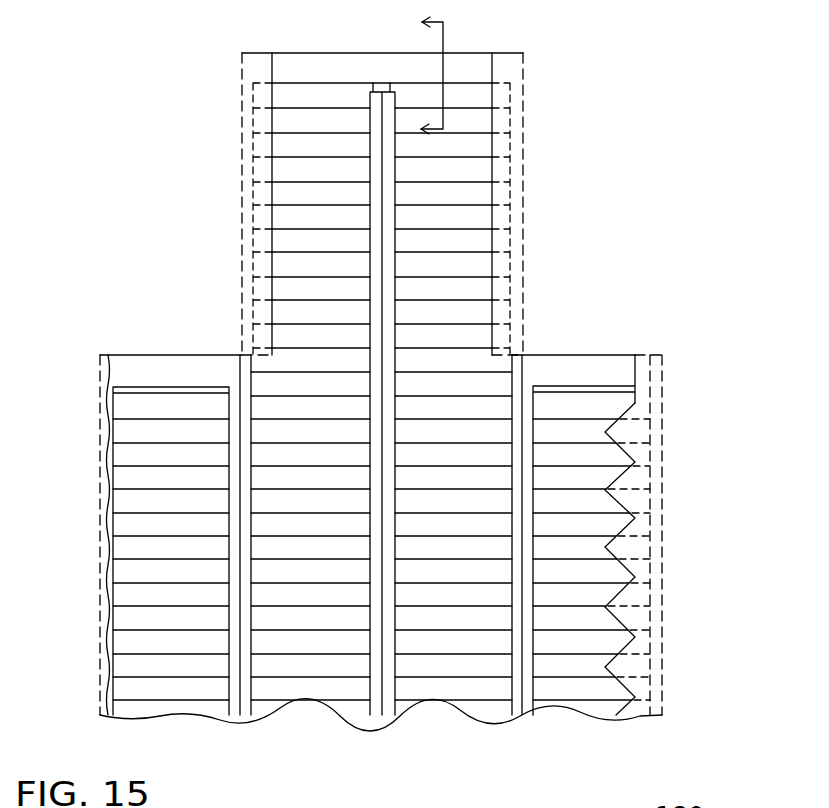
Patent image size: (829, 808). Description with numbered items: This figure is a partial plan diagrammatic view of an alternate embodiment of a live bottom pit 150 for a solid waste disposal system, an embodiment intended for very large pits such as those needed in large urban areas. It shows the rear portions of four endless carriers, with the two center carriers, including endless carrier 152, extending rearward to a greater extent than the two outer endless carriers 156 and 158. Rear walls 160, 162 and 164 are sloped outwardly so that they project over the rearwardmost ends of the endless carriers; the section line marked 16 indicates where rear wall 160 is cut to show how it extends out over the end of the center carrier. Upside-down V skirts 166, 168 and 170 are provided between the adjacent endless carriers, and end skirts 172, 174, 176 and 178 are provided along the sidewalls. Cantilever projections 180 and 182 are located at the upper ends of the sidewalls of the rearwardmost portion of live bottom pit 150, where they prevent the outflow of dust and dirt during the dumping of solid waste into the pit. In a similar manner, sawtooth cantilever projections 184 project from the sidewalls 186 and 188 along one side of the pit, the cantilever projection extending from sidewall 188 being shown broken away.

The live bottom pit 150 is at (588, 144).
The endless carrier 152 is at (318, 716).
The endless carrier 156 is at (186, 720).
The endless carrier 158 is at (584, 718).
The rear wall 160 is at (339, 68).
The rear wall 162 is at (165, 372).
The rear wall 164 is at (575, 372).
The upside-down V skirt 166 is at (243, 720).
The upside-down V skirt 168 is at (385, 718).
The upside-down V skirt 170 is at (525, 718).
The end skirt 172 is at (104, 718).
The end skirt 174 is at (253, 100).
The end skirt 176 is at (520, 105).
The end skirt 178 is at (660, 718).
The cantilever projection 180 is at (274, 72).
The cantilever projection 182 is at (492, 60).
The sawtooth cantilever projections 184 is at (623, 403).
The sidewall 186 is at (663, 420).
The sidewall 188 is at (100, 497).
The section line 16- 16 is at (420, 71).